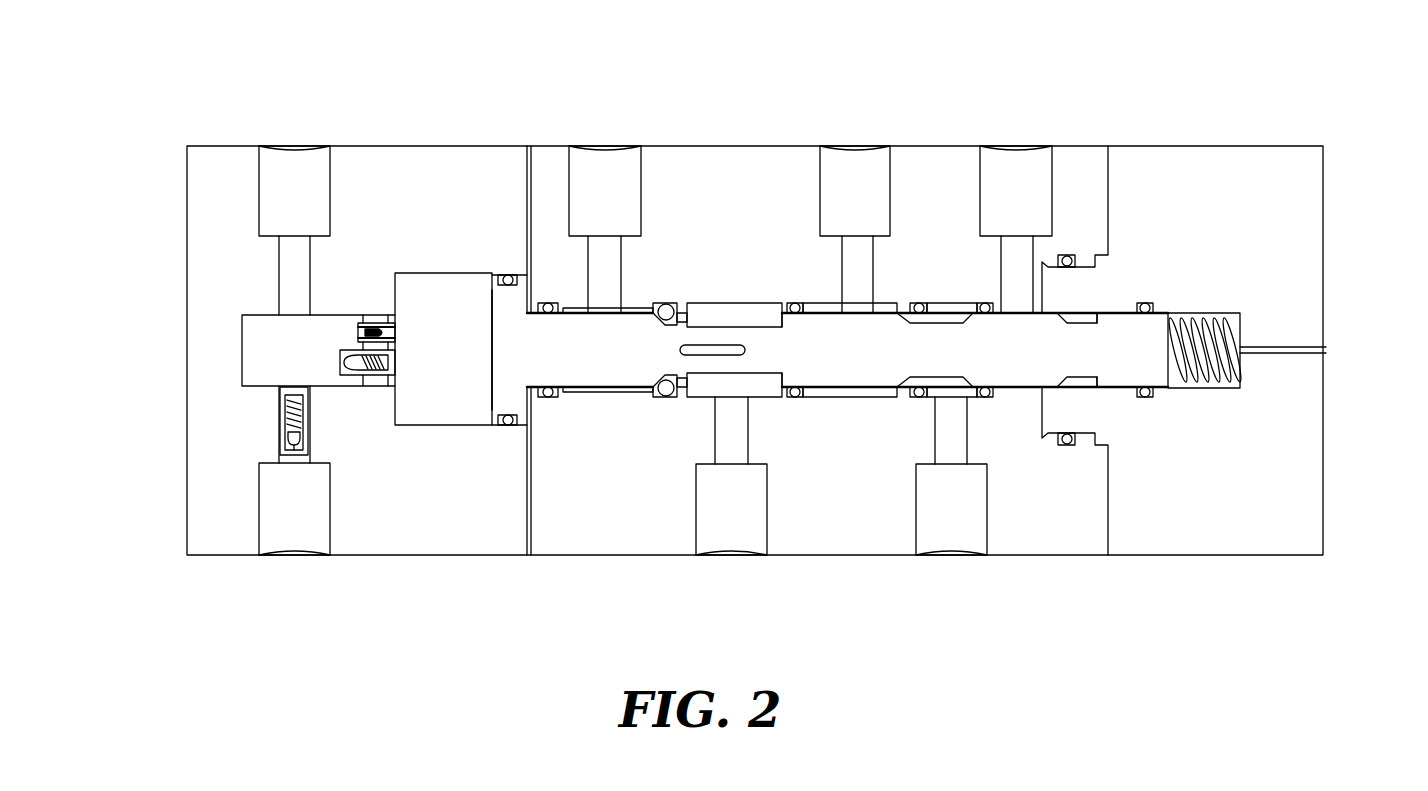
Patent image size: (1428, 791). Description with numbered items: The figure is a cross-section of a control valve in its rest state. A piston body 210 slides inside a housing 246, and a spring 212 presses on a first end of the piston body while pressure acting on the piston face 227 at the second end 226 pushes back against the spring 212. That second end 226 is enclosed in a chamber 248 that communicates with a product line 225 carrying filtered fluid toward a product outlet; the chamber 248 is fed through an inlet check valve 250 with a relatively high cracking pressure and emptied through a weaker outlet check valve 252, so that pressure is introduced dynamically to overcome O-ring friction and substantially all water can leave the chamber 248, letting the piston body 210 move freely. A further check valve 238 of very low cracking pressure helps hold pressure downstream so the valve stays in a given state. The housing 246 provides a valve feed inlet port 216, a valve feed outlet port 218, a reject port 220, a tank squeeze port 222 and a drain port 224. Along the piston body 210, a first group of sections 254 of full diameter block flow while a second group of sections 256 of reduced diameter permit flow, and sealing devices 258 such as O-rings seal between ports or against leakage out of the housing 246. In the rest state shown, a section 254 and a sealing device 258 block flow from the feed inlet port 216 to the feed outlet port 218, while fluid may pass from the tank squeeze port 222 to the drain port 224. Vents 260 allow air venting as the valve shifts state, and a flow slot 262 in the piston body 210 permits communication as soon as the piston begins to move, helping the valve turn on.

The piston body 210 is at (827, 337).
The spring 212 is at (1212, 316).
The valve feed inlet port 216 is at (731, 537).
The valve feed outlet port 218 is at (617, 175).
The reject port 220 is at (1025, 178).
The tank squeeze port 222 is at (963, 527).
The drain port 224 is at (855, 175).
The product line 225 is at (291, 162).
The second end of the piston body 226 is at (520, 273).
The piston face 227 is at (490, 345).
The check valve 238 is at (283, 415).
The housing 246 is at (853, 540).
The chamber 248 is at (450, 408).
The inlet check valve 250 is at (375, 377).
The outlet check valve 252 is at (375, 315).
The first group of sections 254 is at (583, 345).
The second group of sections 256 is at (760, 355).
The sealing devices 258 is at (793, 305).
The vents 260 is at (1320, 350).
The flow slot 262 is at (717, 352).